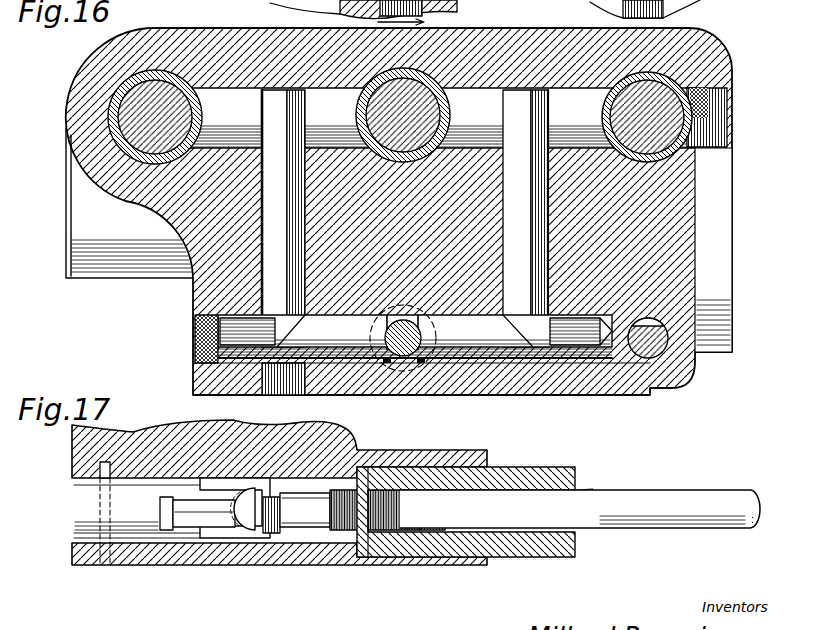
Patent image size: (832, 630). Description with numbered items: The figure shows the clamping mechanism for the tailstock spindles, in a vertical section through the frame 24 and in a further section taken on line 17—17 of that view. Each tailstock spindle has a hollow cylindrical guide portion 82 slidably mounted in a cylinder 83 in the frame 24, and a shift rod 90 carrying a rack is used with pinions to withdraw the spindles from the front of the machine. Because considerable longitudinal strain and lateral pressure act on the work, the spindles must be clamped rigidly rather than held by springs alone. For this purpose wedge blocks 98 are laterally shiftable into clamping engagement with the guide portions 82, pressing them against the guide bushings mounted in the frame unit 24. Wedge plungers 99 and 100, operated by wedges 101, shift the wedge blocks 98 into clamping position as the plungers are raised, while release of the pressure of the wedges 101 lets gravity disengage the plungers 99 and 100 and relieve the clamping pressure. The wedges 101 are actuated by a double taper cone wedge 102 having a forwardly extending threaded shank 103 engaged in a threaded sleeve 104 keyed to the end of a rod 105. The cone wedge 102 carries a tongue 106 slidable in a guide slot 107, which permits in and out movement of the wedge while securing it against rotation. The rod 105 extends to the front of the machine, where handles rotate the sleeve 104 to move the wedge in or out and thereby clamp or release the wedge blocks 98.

In FIG. 16, the frame 24 is at (72, 158).
In FIG. 17, the frame 24 is at (345, 552).
In FIG. 16, the hollow cylindrical guide portion 82 is at (152, 107).
In FIG. 16, the cylinder 83 is at (107, 107).
In FIG. 16, the shift rod 90 is at (655, 352).
In FIG. 16, the wedge block 98 is at (200, 97).
In FIG. 16, the wedge plunger 99 is at (277, 285).
In FIG. 16, the wedge plunger 100 is at (600, 220).
In FIG. 16, the wedge 101 is at (475, 343).
In FIG. 17, the double taper cone wedge 102 is at (222, 528).
In FIG. 16, the threaded shank 103 is at (343, 345).
In FIG. 17, the threaded shank 103 is at (303, 520).
In FIG. 17, the threaded sleeve 104 is at (503, 482).
In FIG. 17, the rod 105 is at (622, 507).
In FIG. 17, the tongue 106 is at (188, 512).
In FIG. 17, the guide slot 107 is at (157, 512).
In FIG. 16, the section line 17- 17 is at (165, 362).